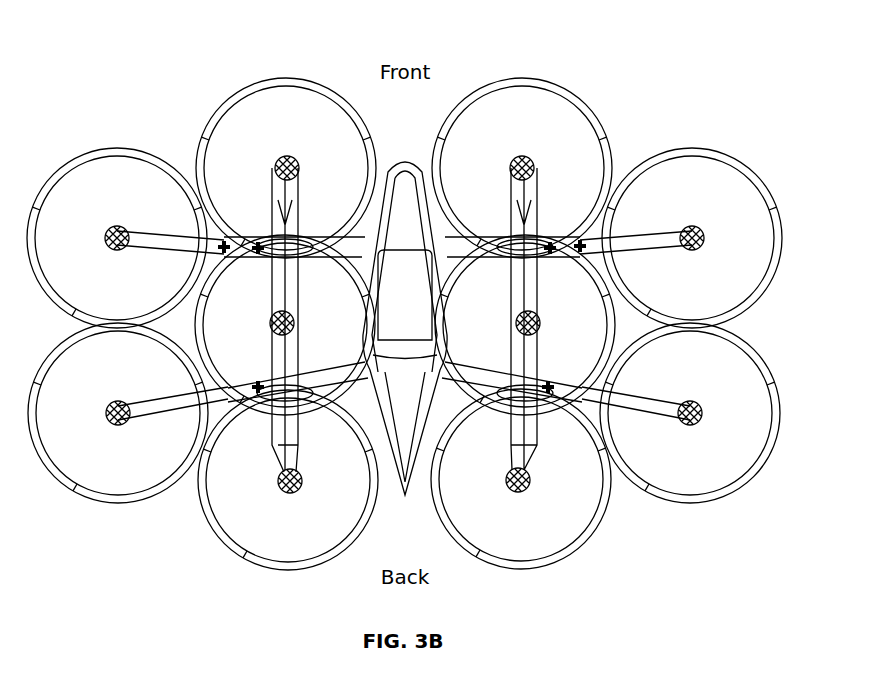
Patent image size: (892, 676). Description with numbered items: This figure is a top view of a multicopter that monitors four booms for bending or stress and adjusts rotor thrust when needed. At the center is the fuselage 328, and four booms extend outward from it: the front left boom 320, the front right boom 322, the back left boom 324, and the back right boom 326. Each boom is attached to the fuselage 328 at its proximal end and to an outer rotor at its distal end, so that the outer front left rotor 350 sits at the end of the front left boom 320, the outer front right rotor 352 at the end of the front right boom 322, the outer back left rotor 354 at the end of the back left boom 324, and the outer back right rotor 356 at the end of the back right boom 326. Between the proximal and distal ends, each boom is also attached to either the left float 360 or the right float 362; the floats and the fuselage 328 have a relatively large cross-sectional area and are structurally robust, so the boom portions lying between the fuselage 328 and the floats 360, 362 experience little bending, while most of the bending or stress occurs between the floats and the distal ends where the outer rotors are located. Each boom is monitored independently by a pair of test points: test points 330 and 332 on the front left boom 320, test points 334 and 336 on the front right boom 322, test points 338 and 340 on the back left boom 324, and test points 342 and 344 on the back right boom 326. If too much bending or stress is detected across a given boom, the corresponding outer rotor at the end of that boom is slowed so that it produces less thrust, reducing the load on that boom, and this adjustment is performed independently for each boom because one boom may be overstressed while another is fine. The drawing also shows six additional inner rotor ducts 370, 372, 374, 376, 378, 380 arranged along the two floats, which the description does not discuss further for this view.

The front left boom 320 is at (156, 232).
The front right boom 322 is at (652, 232).
The back left boom 324 is at (332, 358).
The back right boom 326 is at (478, 358).
The fuselage 328 is at (405, 163).
The test point 330 is at (222, 247).
The test point 332 is at (256, 246).
The test point 334 is at (552, 246).
The test point 336 is at (582, 246).
The test point 338 is at (226, 393).
The test point 340 is at (258, 385).
The test point 342 is at (550, 385).
The test point 344 is at (584, 394).
The outer front left rotor 350 is at (118, 148).
The outer front right rotor 352 is at (690, 148).
The outer back left rotor 354 is at (116, 503).
The outer back right rotor 356 is at (692, 503).
The left float 360 is at (297, 457).
The right float 362 is at (513, 457).
The inner rotor duct 370 is at (296, 77).
The inner rotor duct 372 is at (206, 312).
The inner rotor duct 374 is at (534, 77).
The inner rotor duct 376 is at (604, 312).
The inner rotor duct 378 is at (286, 571).
The inner rotor duct 380 is at (522, 570).